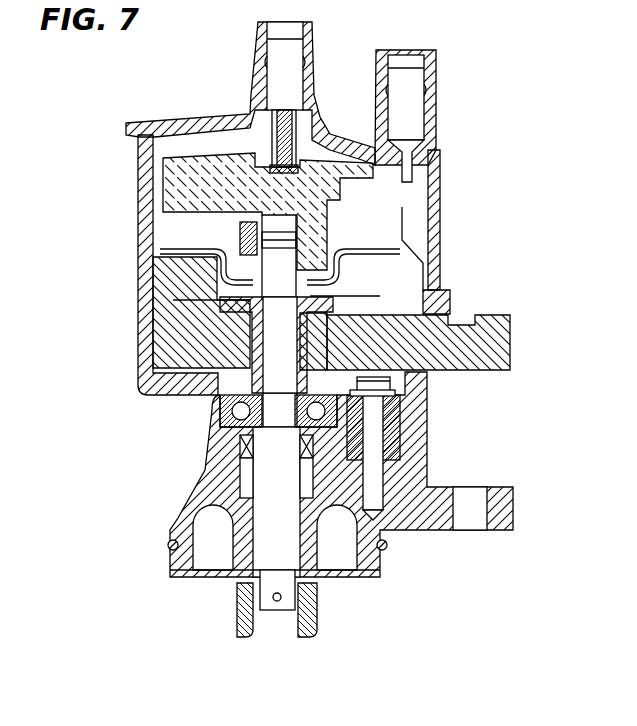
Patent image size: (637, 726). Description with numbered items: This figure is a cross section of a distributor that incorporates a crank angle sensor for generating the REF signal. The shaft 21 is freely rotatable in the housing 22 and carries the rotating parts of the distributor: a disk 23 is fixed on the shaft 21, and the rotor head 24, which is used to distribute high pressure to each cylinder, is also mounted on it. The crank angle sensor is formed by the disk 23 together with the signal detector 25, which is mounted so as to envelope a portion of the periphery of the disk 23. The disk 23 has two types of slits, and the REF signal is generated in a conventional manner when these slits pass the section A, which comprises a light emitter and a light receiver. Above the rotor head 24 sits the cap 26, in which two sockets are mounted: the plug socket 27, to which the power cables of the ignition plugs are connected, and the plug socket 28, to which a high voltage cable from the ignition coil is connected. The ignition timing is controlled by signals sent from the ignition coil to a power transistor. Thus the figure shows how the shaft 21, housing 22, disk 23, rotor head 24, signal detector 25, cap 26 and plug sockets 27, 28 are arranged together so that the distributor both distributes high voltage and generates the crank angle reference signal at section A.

The shaft 21 is at (297, 575).
The housing 22 is at (413, 510).
The disk 23 is at (365, 292).
The rotor head 24 is at (180, 189).
The signal detector 25 is at (470, 352).
The cap 26 is at (436, 188).
The plug socket 27 is at (408, 111).
The plug socket 28 is at (275, 83).
The section A is at (187, 283).